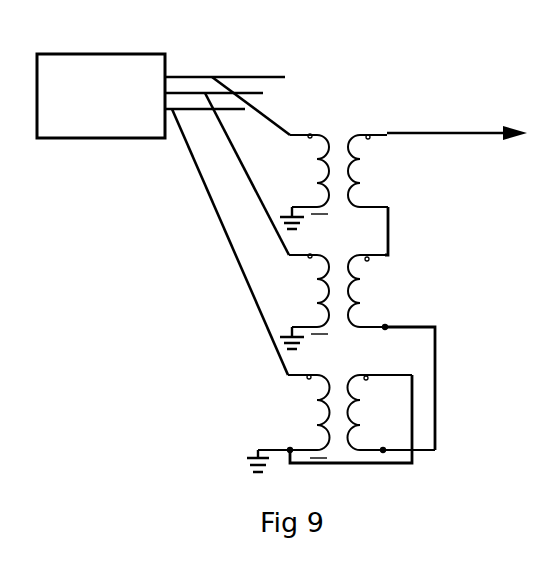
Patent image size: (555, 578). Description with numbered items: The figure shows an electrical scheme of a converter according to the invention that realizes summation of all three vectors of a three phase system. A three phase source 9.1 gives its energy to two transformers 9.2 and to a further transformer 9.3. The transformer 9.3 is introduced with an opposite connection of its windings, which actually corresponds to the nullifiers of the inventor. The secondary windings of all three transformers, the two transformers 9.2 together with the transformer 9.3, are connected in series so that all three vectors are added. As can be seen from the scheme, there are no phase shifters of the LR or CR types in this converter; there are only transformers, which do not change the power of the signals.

The three phase source 9.1 is at (121, 154).
The two transformers 9.2 is at (213, 433).
The transformer 9.3 is at (425, 193).